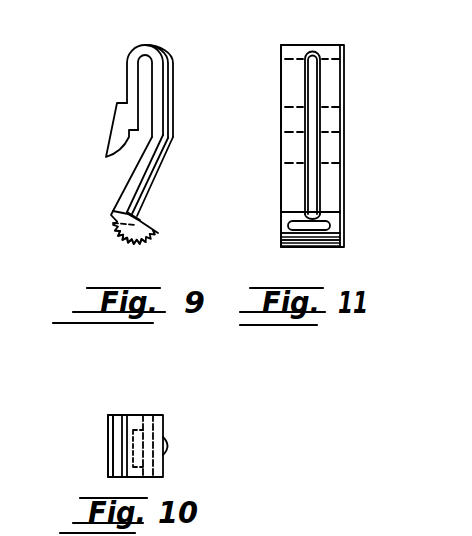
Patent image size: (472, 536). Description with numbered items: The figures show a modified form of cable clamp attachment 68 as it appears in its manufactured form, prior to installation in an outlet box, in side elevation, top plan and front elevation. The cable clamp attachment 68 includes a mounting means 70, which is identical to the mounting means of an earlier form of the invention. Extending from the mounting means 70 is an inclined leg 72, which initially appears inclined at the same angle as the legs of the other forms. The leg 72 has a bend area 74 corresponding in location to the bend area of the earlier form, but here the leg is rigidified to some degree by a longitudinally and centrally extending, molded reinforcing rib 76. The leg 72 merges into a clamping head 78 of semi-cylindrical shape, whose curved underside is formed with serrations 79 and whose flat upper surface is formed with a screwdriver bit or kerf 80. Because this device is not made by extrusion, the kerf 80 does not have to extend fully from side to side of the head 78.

In FIG. 9, the cable clamp attachment 68 is at (182, 54).
In FIG. 11, the cable clamp attachment 68 is at (353, 62).
In FIG. 10, the cable clamp attachment 68 is at (154, 413).
In FIG. 9, the mounting means 70 is at (108, 132).
In FIG. 10, the mounting means 70 is at (106, 452).
In FIG. 9, the inclined leg 72 is at (148, 180).
In FIG. 11, the inclined leg 72 is at (343, 148).
In FIG. 9, the bend area 74 is at (175, 139).
In FIG. 9, the reinforcing rib 76 is at (175, 97).
In FIG. 11, the reinforcing rib 76 is at (317, 120).
In FIG. 10, the reinforcing rib 76 is at (169, 444).
In FIG. 9, the clamping head 78 is at (150, 230).
In FIG. 11, the clamping head 78 is at (338, 226).
In FIG. 9, the serrations 79 is at (123, 242).
In FIG. 11, the serrations 79 is at (298, 243).
In FIG. 9, the kerf 80 is at (113, 224).
In FIG. 11, the kerf 80 is at (325, 221).